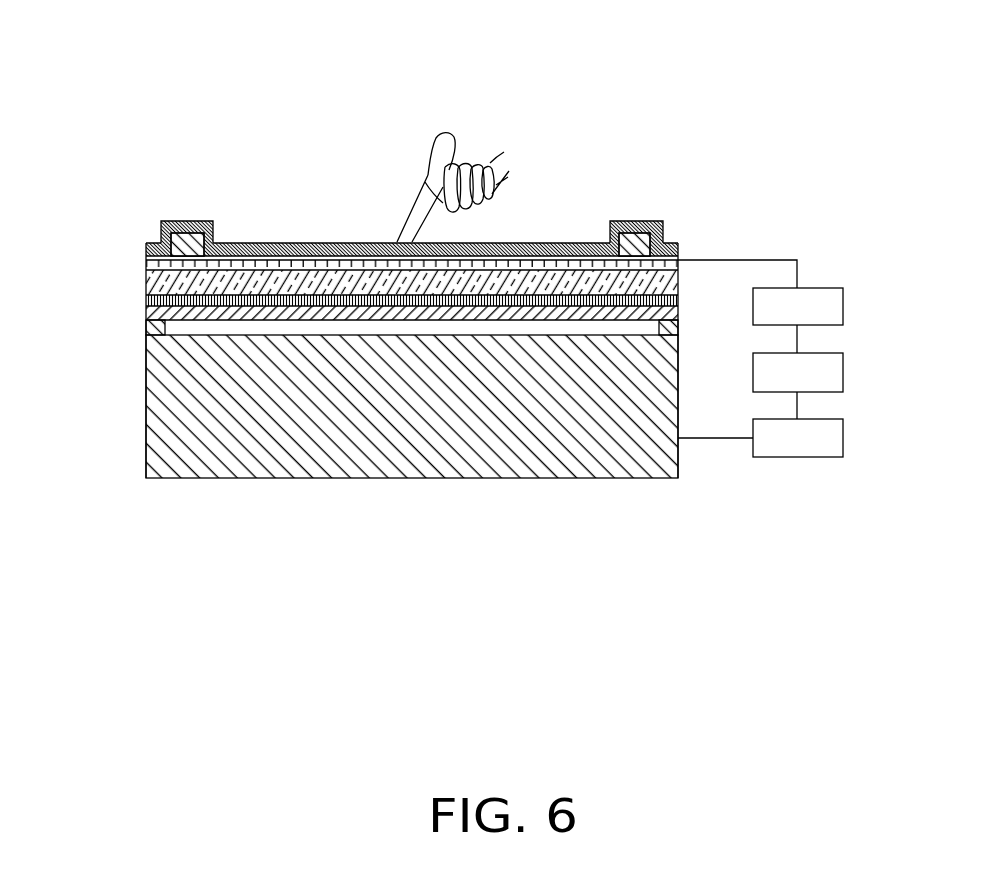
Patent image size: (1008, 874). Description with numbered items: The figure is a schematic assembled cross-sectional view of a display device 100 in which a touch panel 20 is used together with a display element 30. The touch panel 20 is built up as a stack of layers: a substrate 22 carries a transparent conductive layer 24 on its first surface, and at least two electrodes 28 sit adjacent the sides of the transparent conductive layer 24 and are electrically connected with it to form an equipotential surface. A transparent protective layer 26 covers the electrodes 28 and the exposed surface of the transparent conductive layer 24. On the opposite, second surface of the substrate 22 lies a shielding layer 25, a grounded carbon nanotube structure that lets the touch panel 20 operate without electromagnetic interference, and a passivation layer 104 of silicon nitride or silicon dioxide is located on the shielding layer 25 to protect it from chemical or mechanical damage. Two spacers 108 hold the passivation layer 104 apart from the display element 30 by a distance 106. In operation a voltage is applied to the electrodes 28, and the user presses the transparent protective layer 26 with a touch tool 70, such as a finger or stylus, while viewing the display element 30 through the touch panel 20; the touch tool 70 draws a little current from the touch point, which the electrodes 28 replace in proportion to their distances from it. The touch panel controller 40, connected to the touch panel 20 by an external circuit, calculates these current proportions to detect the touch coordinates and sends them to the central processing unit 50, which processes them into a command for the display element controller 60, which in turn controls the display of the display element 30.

The display device 100 is at (478, 32).
The touch panel 20 is at (66, 225).
The transparent protective layer 26 is at (146, 247).
The transparent conductive layer 24 is at (146, 262).
The substrate 22 is at (146, 282).
The shielding layer 25 is at (146, 300).
The passivation layer 104 is at (146, 313).
The spacers 108 is at (146, 330).
The distance 106 is at (637, 326).
The display element 30 is at (168, 403).
The electrodes 28 is at (643, 221).
The touch tool 70 is at (433, 162).
The touch panel controller 40 is at (843, 306).
The central processing unit 50 is at (843, 372).
The display element controller 60 is at (843, 437).